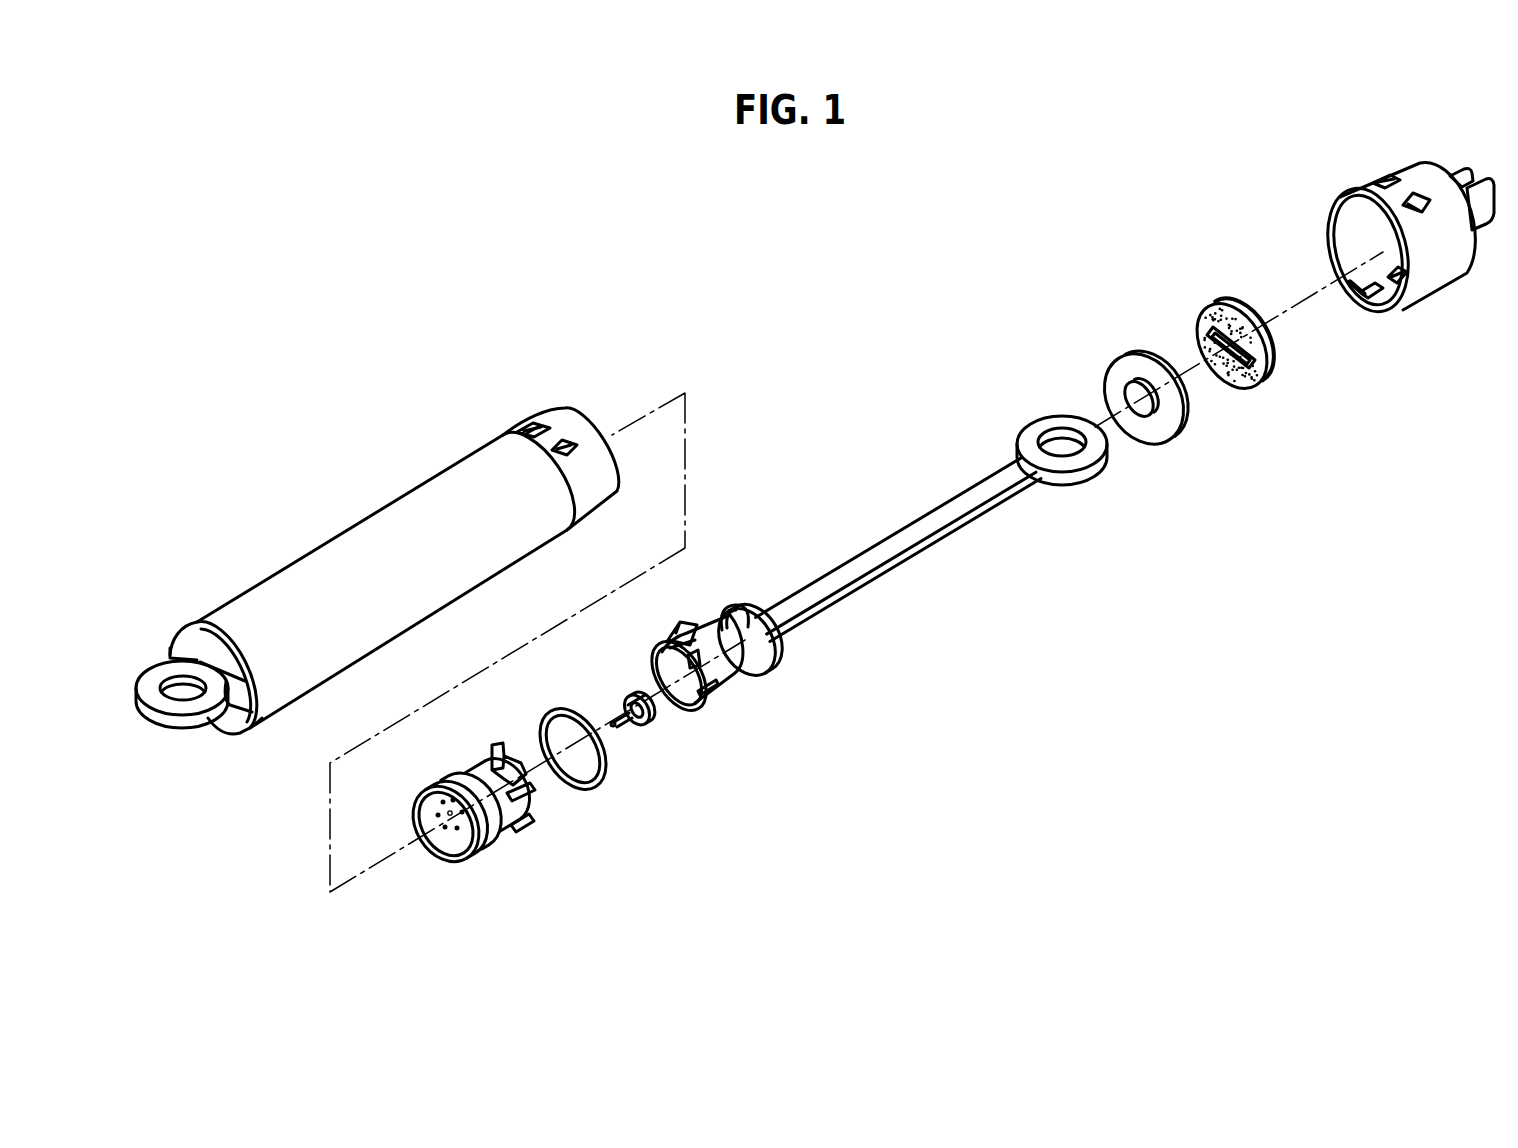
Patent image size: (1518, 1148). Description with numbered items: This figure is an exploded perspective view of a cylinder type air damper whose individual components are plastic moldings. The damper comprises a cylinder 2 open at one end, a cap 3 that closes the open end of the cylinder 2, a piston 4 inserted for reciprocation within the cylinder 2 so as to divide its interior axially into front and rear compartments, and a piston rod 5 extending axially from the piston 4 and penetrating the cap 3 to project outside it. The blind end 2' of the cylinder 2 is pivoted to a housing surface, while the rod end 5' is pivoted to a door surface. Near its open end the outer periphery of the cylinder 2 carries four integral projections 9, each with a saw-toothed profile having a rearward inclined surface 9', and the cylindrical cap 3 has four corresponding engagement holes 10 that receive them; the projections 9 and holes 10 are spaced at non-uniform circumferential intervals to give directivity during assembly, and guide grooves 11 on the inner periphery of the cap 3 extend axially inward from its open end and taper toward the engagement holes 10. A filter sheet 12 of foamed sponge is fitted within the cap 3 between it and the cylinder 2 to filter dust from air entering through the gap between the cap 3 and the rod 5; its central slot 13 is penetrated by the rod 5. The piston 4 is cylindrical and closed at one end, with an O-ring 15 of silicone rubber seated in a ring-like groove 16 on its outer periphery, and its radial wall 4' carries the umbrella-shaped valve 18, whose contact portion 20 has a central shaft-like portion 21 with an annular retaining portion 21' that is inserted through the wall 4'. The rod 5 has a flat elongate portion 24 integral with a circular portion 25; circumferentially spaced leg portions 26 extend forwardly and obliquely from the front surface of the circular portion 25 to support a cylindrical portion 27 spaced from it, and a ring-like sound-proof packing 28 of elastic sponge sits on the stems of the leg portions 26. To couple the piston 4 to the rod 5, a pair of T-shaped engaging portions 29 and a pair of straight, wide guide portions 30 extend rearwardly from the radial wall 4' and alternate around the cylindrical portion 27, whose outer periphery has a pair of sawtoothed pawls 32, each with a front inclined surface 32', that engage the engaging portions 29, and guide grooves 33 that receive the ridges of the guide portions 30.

The cylinder 2 is at (394, 568).
The blind end 2' is at (179, 686).
The cap 3 is at (1446, 276).
The piston 4 is at (465, 840).
The radial wall 4' is at (446, 848).
The piston rod 5 is at (889, 537).
The rod end 5' is at (1064, 477).
The projections 9 is at (564, 439).
The rearward inclined surface 9' is at (546, 396).
The engagement holes 10 is at (1416, 196).
The guide grooves 11 is at (1368, 298).
The filter sheet 12 is at (1243, 387).
The slot 13 is at (1266, 339).
The O-ring 15 is at (594, 790).
The ring-like groove 16 is at (512, 847).
The valve 18 is at (632, 787).
The contact portion 20 is at (645, 723).
The shaft-like portion 21 is at (633, 750).
The retaining portion 21' is at (592, 689).
The flat elongate portion 24 is at (877, 582).
The circular portion 25 is at (778, 652).
The leg portions 26 is at (735, 606).
The cylindrical portion 27 is at (740, 690).
The sound-proof packing 28 is at (1163, 440).
The T-shaped engaging portions 29 is at (498, 745).
The guide portions 30 is at (534, 801).
The pawls 32 is at (676, 611).
The front inclined surface 32' is at (656, 666).
The guide grooves 33 is at (706, 694).